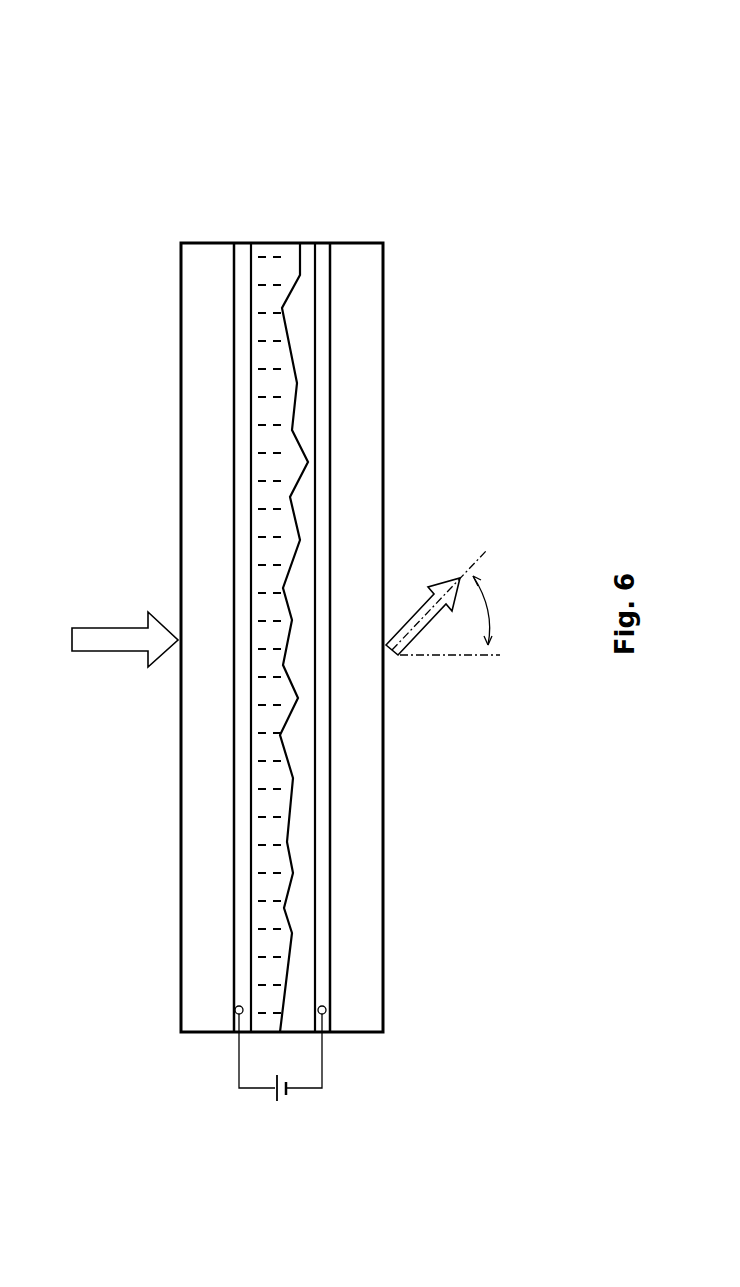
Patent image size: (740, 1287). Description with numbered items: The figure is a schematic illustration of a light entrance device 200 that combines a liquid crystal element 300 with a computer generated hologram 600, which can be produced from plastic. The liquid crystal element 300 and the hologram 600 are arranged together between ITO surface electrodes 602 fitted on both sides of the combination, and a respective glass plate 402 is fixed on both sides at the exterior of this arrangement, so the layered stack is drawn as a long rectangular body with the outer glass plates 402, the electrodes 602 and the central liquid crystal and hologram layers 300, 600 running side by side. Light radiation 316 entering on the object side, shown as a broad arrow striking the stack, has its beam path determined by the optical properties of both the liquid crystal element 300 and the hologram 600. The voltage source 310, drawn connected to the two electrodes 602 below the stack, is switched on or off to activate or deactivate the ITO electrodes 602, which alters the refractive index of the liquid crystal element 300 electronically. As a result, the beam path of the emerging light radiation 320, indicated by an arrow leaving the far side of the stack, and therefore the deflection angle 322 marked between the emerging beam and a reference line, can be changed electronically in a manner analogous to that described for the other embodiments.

The light entrance device 200 is at (120, 232).
The glass plate 402 is at (207, 262).
The liquid crystal element 300 is at (277, 272).
The computer generated hologram (CGH) 600 is at (300, 315).
The ITO surface electrodes 602 is at (242, 925).
The light radiation entering on the object side 316 is at (112, 628).
The emerging light radiation 320 is at (415, 605).
The deflection angle 322 is at (485, 605).
The voltage source 310 is at (283, 1100).